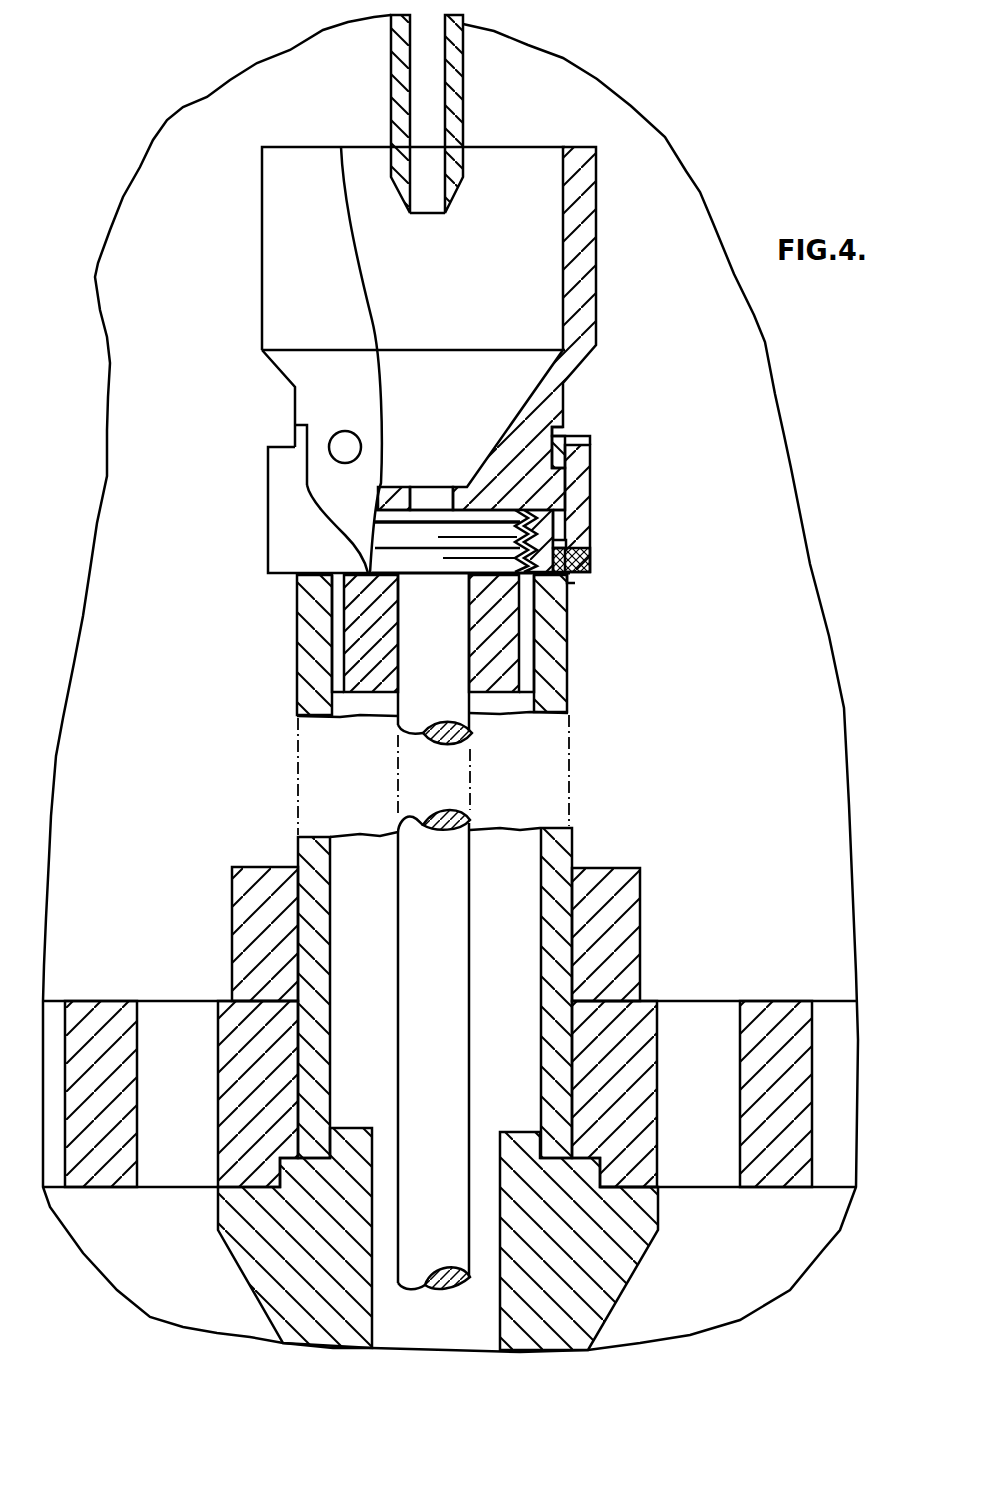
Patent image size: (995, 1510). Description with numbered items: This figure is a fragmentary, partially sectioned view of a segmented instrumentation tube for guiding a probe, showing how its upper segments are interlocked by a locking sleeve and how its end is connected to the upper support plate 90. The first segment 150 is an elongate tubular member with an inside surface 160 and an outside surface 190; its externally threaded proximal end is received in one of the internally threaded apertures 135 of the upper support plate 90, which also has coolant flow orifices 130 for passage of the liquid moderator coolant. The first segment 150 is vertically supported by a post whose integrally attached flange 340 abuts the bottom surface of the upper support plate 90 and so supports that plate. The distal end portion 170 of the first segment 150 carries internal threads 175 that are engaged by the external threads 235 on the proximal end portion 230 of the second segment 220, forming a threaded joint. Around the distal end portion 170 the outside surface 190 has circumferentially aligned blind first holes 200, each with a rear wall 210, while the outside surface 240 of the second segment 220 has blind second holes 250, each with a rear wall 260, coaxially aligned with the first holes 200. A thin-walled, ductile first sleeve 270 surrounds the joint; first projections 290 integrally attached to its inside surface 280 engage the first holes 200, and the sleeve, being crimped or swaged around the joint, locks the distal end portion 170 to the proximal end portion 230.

The upper support plate 90 is at (791, 1023).
The coolant flow orifices 130 is at (137, 1157).
The internally threaded apertures 135 is at (568, 1050).
The first segment 150 is at (297, 672).
The inside surface 160 is at (337, 698).
The distal end portion 170 is at (305, 623).
The internal threads 175 is at (522, 513).
The outside surface 190 is at (560, 662).
The first holes 200 is at (568, 547).
The rear wall 210 is at (567, 567).
The second segment 220 is at (262, 215).
The proximal end portion 230 is at (297, 394).
The external threads 235 is at (462, 563).
The outside surface 240 is at (557, 398).
The second holes 250 is at (343, 437).
The rear wall 260 is at (590, 440).
The first sleeve 270 is at (281, 498).
The inside surface 280 is at (560, 503).
The first projections 290 is at (572, 583).
The flange 340 is at (607, 1270).